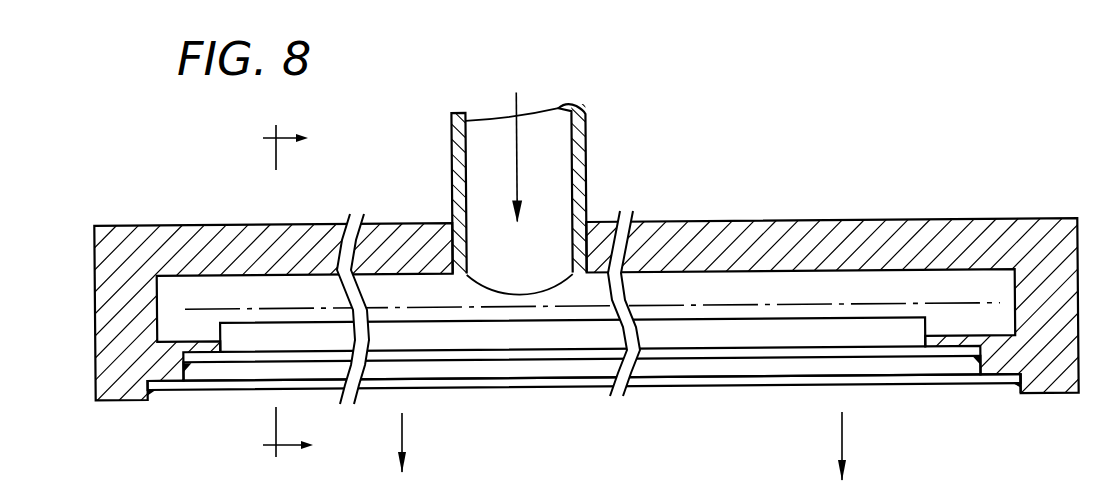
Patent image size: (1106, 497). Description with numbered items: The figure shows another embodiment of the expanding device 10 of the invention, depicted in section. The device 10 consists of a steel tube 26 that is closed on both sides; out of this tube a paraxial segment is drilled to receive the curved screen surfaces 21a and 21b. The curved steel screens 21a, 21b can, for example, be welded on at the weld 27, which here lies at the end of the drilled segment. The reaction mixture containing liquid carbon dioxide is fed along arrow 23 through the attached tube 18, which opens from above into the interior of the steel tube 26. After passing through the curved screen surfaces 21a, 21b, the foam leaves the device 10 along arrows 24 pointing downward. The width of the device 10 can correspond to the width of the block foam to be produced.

The device 10 is at (787, 141).
The attached tube 18 is at (577, 128).
The arrow 23 is at (518, 148).
The curved screen surface 21a is at (682, 360).
The curved screen surface 21b is at (735, 383).
The arrows 24 is at (402, 430).
The steel tube 26 is at (900, 235).
The weld 27 is at (1020, 383).